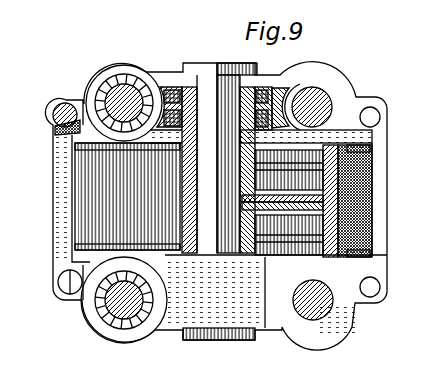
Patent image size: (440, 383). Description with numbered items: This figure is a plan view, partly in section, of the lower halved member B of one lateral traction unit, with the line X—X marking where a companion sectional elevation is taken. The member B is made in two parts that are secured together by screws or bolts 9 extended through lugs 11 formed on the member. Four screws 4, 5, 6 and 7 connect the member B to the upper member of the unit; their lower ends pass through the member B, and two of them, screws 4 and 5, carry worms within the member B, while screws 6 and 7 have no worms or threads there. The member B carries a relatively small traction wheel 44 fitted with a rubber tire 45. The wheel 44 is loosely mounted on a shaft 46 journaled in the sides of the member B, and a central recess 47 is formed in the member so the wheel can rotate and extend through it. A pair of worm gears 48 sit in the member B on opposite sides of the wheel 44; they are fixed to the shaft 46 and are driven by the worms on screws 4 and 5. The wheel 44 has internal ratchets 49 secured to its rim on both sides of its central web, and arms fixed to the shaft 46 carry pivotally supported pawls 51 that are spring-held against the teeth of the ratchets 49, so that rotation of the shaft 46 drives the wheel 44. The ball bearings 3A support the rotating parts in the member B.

The screw 4 is at (118, 78).
The ball bearing 3A is at (128, 80).
The shaft 46 is at (211, 80).
The worm gear 48 is at (275, 100).
The screw 7 is at (330, 103).
The lug 11 is at (55, 121).
The screw or bolt 9 is at (58, 104).
The traction wheel 44 is at (312, 140).
The central recess 47 is at (350, 148).
The internal ratchet 49 is at (304, 176).
The rubber tire 45 is at (366, 215).
The pawl 51 is at (179, 160).
The screw 5 is at (112, 312).
The screw 6 is at (330, 306).
The lower halved member B is at (215, 292).
The section line X is at (214, 251).